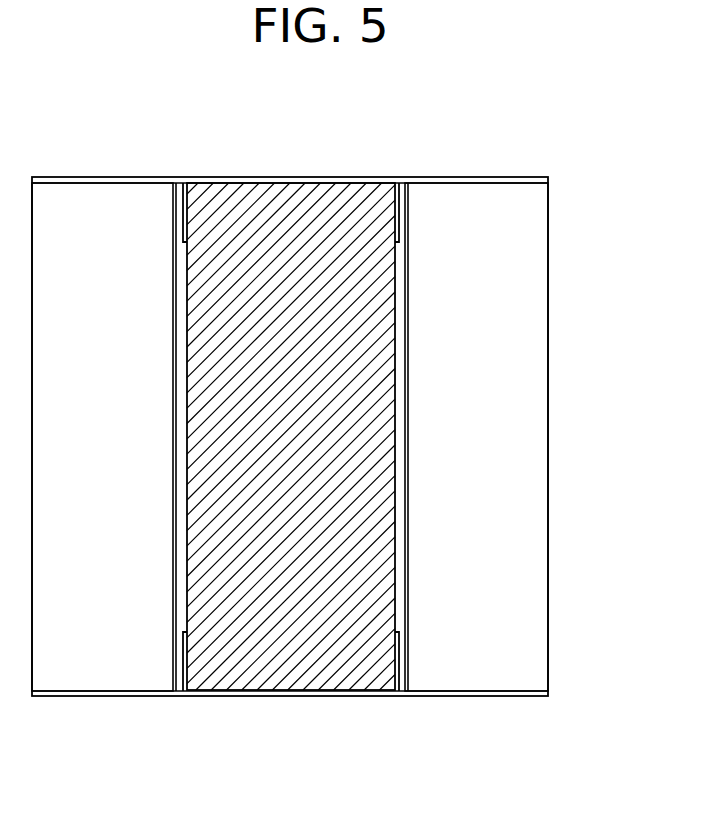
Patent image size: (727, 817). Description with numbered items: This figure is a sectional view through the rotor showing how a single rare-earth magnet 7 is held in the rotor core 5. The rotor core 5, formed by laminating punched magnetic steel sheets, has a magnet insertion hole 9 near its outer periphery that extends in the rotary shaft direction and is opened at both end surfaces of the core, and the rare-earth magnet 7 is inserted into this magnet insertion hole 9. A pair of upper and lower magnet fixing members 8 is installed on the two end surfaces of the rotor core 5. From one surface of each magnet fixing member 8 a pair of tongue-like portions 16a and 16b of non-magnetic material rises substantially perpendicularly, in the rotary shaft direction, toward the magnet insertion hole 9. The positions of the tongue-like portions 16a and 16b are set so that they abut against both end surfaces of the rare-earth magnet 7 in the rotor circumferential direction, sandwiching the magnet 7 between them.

The rotor core 5 is at (490, 309).
The rare-earth magnet 7 is at (308, 462).
The magnet fixing member 8 is at (112, 177).
The magnet insertion hole 9 is at (403, 382).
The tongue-like portion 16a is at (184, 218).
The tongue-like portion 16b is at (399, 218).